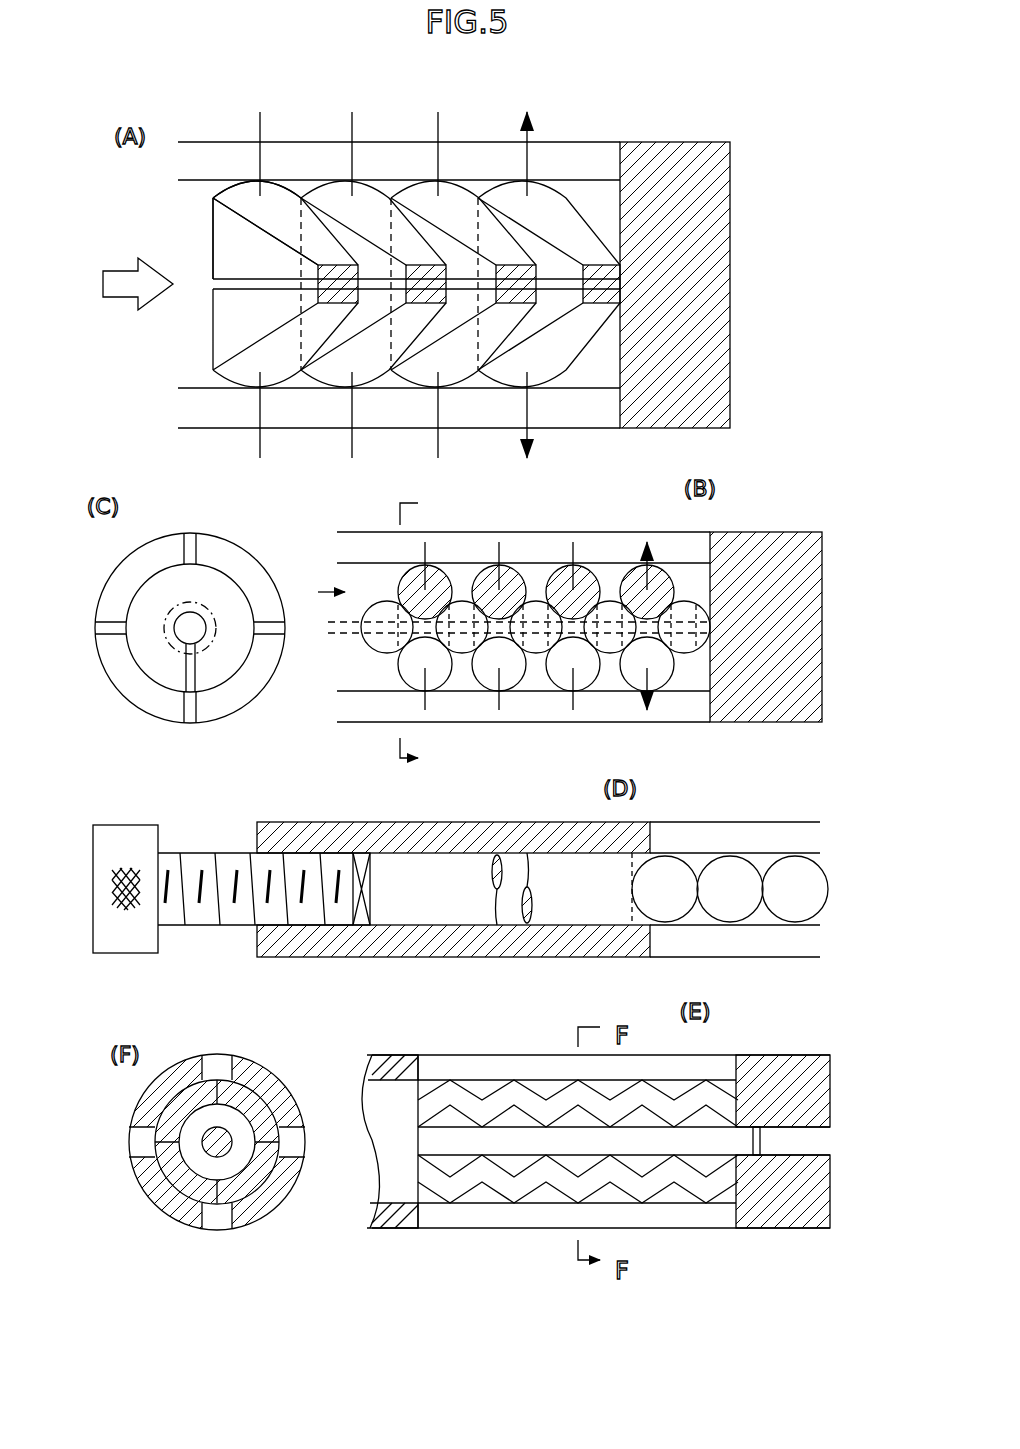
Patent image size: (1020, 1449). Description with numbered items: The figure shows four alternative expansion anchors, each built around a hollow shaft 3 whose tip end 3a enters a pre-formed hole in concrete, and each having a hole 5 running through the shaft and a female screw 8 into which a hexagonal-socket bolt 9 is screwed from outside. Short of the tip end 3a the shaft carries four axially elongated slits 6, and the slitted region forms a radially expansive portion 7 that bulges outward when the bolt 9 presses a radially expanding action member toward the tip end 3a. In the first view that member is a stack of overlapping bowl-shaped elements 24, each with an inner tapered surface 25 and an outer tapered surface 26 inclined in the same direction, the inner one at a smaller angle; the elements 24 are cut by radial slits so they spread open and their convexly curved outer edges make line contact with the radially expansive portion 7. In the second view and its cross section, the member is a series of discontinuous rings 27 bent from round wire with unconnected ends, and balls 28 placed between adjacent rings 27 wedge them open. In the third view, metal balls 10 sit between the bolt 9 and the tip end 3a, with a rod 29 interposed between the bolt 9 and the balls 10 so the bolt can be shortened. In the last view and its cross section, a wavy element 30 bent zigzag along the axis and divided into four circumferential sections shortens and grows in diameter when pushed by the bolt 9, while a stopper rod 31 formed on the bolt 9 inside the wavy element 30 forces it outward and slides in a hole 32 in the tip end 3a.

The hollow shaft 3 is at (430, 840).
The tip end 3a is at (683, 158).
The hole 5 is at (205, 380).
The slits 6 is at (582, 158).
The radially expansive portion 7 is at (492, 110).
The female screw 8 is at (294, 910).
The hexagonal-socket bolt 9 is at (207, 868).
The metal balls 10 is at (790, 875).
The bowl-shaped elements 24 is at (432, 195).
The inner tapered surface 25 is at (243, 207).
The outer tapered surface 26 is at (345, 250).
The discontinuous rings 27 is at (510, 585).
The balls 28 is at (537, 645).
The pipe interior 29 is at (455, 902).
The wavy element 30 is at (528, 1185).
The stopper rod 31 is at (510, 1140).
The hole 32 is at (775, 1150).